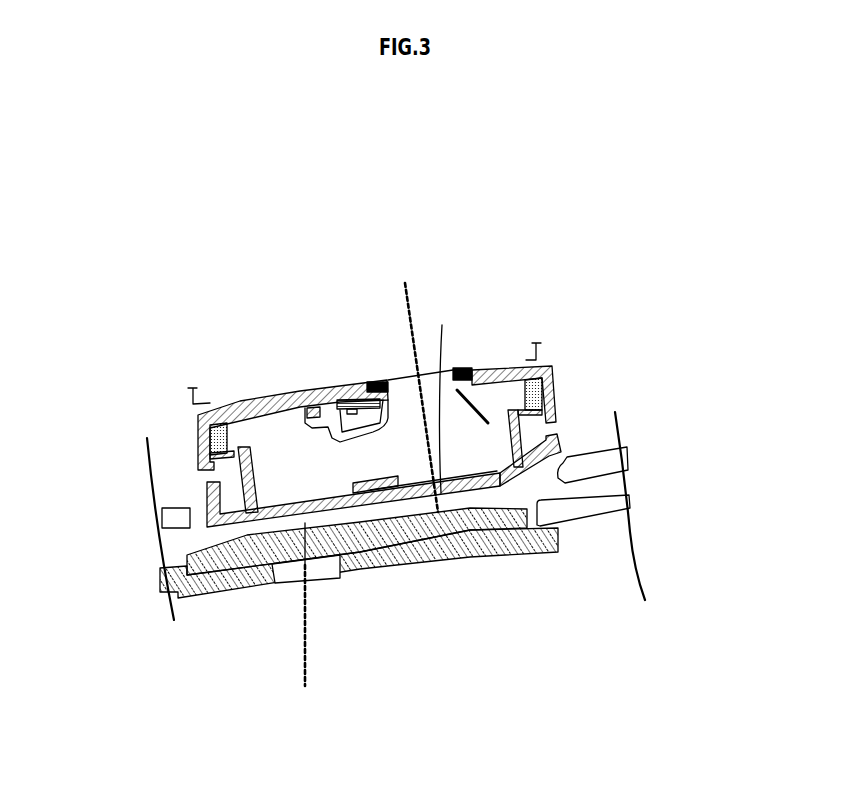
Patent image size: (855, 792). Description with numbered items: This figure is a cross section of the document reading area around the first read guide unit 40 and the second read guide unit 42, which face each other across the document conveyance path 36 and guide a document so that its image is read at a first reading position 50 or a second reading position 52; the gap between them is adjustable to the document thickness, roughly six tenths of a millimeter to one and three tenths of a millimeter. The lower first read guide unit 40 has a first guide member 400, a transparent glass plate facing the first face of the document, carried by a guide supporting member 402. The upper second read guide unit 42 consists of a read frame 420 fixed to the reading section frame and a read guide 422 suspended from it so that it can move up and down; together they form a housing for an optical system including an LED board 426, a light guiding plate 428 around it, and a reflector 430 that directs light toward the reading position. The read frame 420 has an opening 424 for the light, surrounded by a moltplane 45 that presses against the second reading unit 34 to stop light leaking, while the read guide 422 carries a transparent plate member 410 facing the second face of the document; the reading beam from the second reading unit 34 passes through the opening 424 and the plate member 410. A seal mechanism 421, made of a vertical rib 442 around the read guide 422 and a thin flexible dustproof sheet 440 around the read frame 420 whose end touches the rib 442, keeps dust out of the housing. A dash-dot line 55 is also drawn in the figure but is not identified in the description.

The second reading unit 34 is at (541, 356).
The document conveyance path 36 is at (505, 505).
The first read guide unit 40 is at (500, 574).
The second read guide unit 42 is at (230, 407).
The moltplane 45 is at (313, 360).
The first reading position 50 is at (313, 525).
The second reading position 52 is at (488, 473).
The optical axis 55 is at (421, 397).
The first guide member 400 is at (500, 505).
The guide supporting member 402 is at (545, 543).
The plate member 410 is at (440, 397).
The read frame 420 is at (190, 452).
The seal mechanism 421 is at (386, 420).
The read guide 422 is at (566, 437).
The opening 424 is at (397, 377).
The LED board 426 is at (357, 438).
The light guiding plate 428 is at (308, 408).
The reflector 430 is at (483, 407).
The dustproof sheet 440 is at (222, 453).
The rib 442 is at (240, 472).